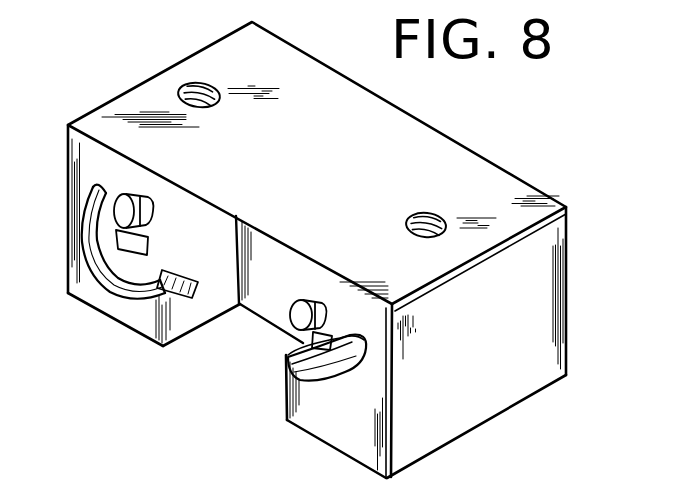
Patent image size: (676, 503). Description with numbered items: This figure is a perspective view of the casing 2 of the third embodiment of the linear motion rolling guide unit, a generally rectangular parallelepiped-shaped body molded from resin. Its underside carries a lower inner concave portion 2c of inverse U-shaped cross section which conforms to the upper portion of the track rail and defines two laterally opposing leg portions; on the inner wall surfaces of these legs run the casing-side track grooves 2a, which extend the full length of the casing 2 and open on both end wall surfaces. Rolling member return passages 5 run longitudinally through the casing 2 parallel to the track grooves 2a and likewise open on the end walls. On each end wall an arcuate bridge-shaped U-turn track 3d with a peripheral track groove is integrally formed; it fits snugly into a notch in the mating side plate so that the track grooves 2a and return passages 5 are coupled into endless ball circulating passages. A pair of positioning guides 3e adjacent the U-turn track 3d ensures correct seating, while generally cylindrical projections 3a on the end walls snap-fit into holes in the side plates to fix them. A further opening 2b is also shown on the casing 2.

The casing 2 is at (311, 128).
The track grooves 2a is at (225, 276).
The bolt hole 2b is at (421, 211).
The lower inner concave portion 2c is at (246, 352).
The cylindrical projections 3a is at (151, 212).
The bridge-shaped U-turn tracks 3d is at (282, 351).
The positioning guides 3e is at (345, 313).
The rolling member return passages 5 is at (392, 369).